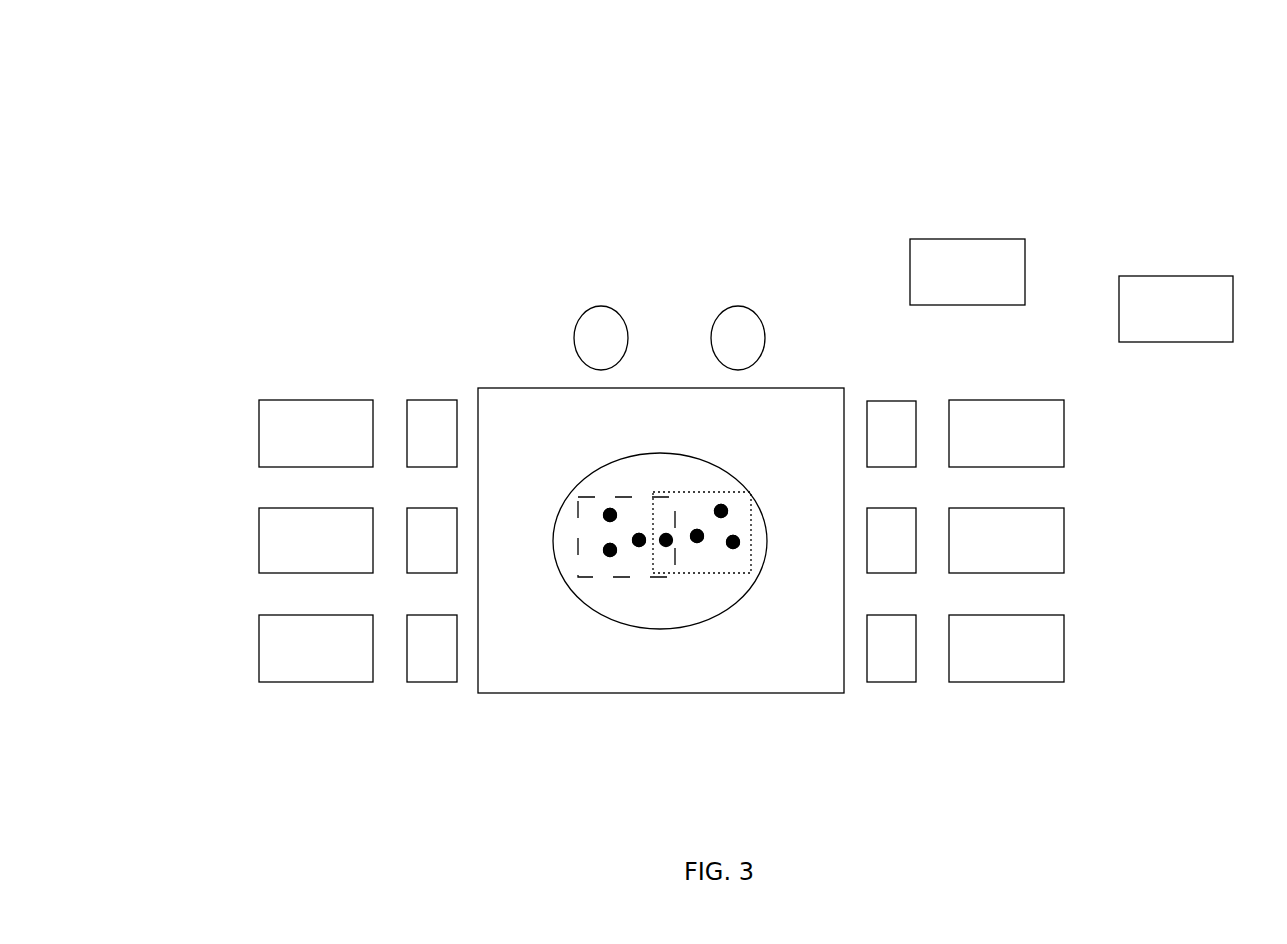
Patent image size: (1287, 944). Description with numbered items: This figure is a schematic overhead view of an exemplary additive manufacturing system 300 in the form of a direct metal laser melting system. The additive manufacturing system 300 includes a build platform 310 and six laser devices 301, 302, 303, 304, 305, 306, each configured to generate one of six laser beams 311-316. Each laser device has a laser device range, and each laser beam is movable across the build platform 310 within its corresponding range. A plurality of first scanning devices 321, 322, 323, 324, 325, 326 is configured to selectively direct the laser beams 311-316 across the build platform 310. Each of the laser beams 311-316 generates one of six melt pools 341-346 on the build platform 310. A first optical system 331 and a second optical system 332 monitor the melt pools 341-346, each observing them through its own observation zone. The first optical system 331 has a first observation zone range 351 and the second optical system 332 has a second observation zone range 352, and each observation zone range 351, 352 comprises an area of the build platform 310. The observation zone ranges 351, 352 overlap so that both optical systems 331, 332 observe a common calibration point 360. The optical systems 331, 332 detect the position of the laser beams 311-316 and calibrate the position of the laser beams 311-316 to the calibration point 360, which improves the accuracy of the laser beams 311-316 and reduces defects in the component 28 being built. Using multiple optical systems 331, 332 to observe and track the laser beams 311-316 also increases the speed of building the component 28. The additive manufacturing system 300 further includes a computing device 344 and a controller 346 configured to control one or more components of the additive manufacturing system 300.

The additive manufacturing system 300 is at (1032, 100).
The laser device 301 is at (259, 432).
The laser device 302 is at (259, 540).
The laser device 303 is at (259, 647).
The laser device 304 is at (1064, 432).
The laser device 305 is at (1064, 540).
The laser device 306 is at (1064, 647).
The build platform 310 is at (672, 387).
The laser beams 311-316 is at (610, 515).
The first scanning device 321 is at (407, 422).
The first scanning device 322 is at (407, 530).
The first scanning device 323 is at (407, 637).
The first scanning device 324 is at (917, 423).
The first scanning device 325 is at (917, 530).
The first scanning device 326 is at (917, 637).
The first optical system 331 is at (601, 305).
The second optical system 332 is at (738, 305).
The melt pools 341-346 is at (639, 540).
The computing device 344 is at (968, 239).
The controller 346 is at (1177, 276).
The first observation zone range 351 is at (625, 577).
The second observation zone range 352 is at (725, 573).
The calibration point 360 is at (666, 540).
The component 28 is at (660, 629).